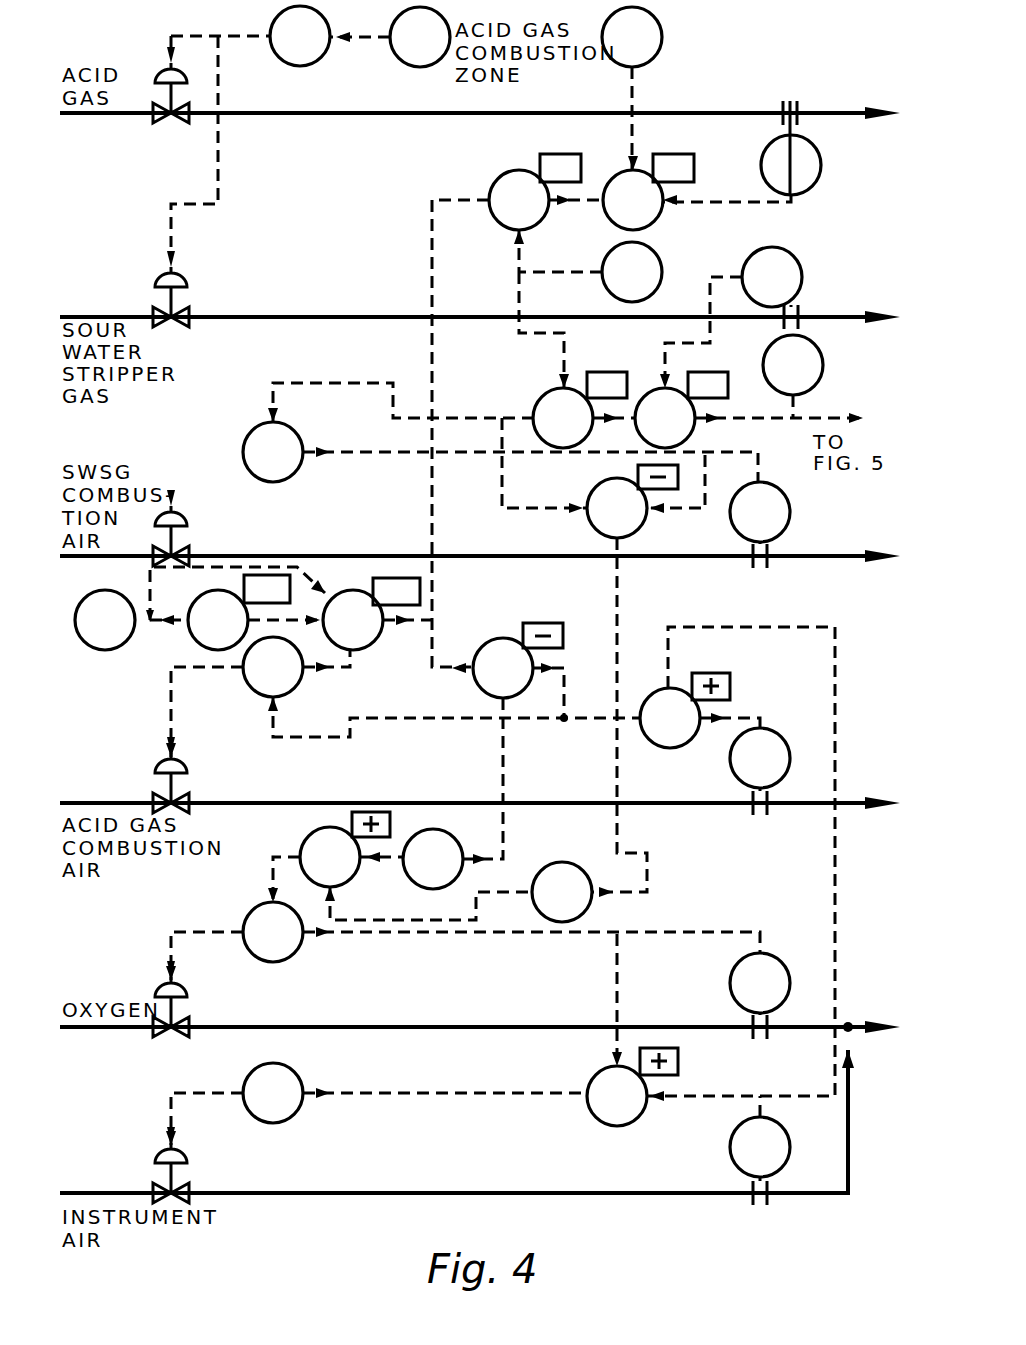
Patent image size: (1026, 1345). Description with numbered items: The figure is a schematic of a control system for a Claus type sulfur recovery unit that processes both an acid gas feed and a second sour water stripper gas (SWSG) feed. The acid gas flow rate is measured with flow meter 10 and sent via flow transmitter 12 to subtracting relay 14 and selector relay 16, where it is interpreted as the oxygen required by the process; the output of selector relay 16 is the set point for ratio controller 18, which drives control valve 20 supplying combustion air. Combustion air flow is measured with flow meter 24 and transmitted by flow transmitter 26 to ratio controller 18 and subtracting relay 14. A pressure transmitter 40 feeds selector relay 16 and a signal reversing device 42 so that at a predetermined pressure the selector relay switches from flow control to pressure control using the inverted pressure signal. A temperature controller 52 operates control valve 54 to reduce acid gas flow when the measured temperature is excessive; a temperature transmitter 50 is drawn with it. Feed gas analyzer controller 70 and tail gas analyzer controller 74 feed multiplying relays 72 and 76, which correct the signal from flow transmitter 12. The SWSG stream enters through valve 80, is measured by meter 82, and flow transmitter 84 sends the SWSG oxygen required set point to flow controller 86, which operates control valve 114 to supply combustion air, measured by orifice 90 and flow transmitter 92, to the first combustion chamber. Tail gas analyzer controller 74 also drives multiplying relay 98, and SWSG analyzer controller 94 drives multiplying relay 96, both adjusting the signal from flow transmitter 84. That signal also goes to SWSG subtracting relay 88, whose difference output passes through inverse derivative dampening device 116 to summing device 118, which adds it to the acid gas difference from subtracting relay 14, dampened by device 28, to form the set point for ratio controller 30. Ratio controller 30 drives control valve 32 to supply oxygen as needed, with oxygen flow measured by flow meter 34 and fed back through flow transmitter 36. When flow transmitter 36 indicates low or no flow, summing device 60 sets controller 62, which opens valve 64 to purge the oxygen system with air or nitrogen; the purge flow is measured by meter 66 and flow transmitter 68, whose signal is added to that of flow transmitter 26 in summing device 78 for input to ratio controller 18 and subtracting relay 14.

The flow meter 10 is at (798, 104).
The flow transmitter 12 is at (821, 170).
The subtracting relay 14 is at (506, 638).
The selector relay 16 is at (372, 645).
The ratio controller 18 is at (256, 695).
The control valve 20 is at (185, 770).
The flow meter 24 is at (768, 815).
The flow transmitter 26 is at (785, 737).
The inverse derivative dampening device 28 is at (416, 886).
The ratio controller 30 is at (297, 955).
The control valve 32 is at (185, 995).
The flow meter 34 is at (768, 1040).
The flow transmitter 36 is at (736, 972).
The pressure transmitter 40 is at (105, 650).
The signal reversing device 42 is at (197, 641).
The temperature transmitter 50 is at (425, 67).
The controller 52 is at (322, 58).
The control valve 54 is at (160, 70).
The summing device 60 is at (595, 1122).
The controller 62 is at (298, 1073).
The valve 64 is at (160, 1152).
The meter 66 is at (768, 1205).
The flow transmitter 68 is at (730, 1150).
The feed gas analyzer controller 70 is at (662, 37).
The multiplying relay 72 is at (618, 175).
The tail gas analyzer controller 74 is at (660, 262).
The multiplying relay 76 is at (497, 178).
The summing device 78 is at (670, 748).
The valve 80 is at (183, 276).
The meter 82 is at (799, 308).
The flow transmitter 84 is at (823, 365).
The flow controller 86 is at (252, 425).
The SWSG subtracting relay 88 is at (593, 492).
The SWSG combustion air flow orifice 90 is at (768, 570).
The SWSG combustion air flow transmitter 92 is at (790, 512).
The SWSG analyzer controller 94 is at (795, 258).
The multiplying relay 96 is at (660, 385).
The multiplying relay 98 is at (545, 395).
The control valve 114 is at (185, 515).
The inverse derivative dampening device 116 is at (552, 864).
The summing device 118 is at (308, 840).